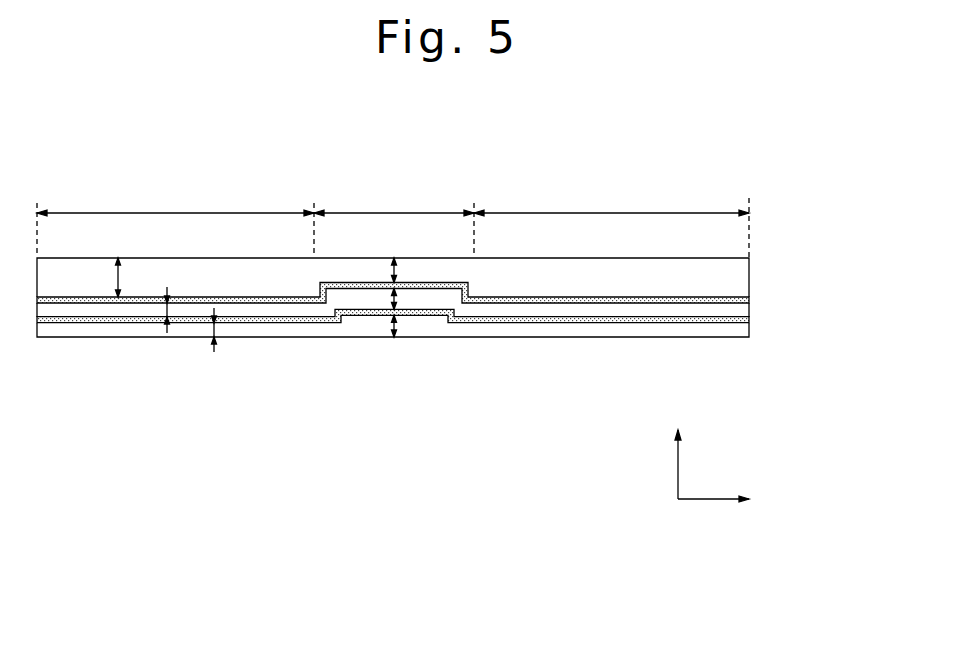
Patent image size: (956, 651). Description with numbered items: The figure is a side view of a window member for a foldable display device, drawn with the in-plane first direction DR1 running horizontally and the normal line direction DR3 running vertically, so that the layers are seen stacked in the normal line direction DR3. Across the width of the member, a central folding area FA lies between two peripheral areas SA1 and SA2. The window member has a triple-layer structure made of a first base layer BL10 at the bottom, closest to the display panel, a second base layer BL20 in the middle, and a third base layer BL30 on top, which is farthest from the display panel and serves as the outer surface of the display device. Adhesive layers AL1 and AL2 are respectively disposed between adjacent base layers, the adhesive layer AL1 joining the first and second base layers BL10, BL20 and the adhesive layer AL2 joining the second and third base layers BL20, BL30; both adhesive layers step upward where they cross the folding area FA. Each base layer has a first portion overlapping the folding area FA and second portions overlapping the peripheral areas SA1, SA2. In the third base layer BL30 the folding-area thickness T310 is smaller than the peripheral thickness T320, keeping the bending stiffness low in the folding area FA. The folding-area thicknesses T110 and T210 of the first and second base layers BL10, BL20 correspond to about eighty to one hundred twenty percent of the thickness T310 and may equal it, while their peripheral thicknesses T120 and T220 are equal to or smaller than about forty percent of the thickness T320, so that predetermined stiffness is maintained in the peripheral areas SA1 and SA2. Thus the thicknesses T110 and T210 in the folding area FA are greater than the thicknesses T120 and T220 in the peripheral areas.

The peripheral area SA1 is at (175, 223).
The folding area FA is at (394, 203).
The peripheral area SA2 is at (611, 223).
The third base layer BL30 is at (742, 282).
The second base layer BL20 is at (742, 310).
The first base layer BL10 is at (742, 328).
The adhesive layer AL2 is at (571, 303).
The adhesive layer AL1 is at (507, 323).
The thickness of the second portions of the third base layer T320 is at (94, 277).
The thickness of the second portions of the second base layer T220 is at (166, 300).
The thickness of the second portions of the first base layer T120 is at (213, 342).
The thickness of the first portion of the third base layer T310 is at (419, 270).
The thickness of the first portion of the second base layer T210 is at (419, 298).
The thickness of the first portion of the first base layer T110 is at (419, 325).
The normal line direction DR3 is at (678, 454).
The first direction DR1 is at (734, 499).